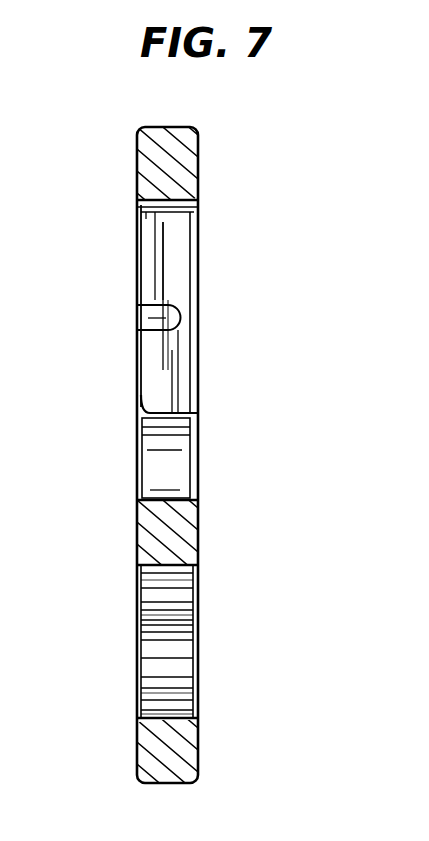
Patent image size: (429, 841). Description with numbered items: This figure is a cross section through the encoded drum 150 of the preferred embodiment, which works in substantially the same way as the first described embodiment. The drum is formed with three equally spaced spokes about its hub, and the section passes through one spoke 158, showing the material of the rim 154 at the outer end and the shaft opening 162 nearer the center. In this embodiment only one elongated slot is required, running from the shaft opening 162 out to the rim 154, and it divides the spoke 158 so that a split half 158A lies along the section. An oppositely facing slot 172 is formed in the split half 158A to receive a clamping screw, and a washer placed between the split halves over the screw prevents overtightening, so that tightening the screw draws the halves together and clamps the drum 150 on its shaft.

The encoded drum 150 is at (281, 267).
The rim 154 is at (199, 171).
The spoke 158 is at (201, 258).
The split half 158A is at (185, 357).
The shaft opening 162 is at (180, 468).
The slot 172 is at (138, 318).